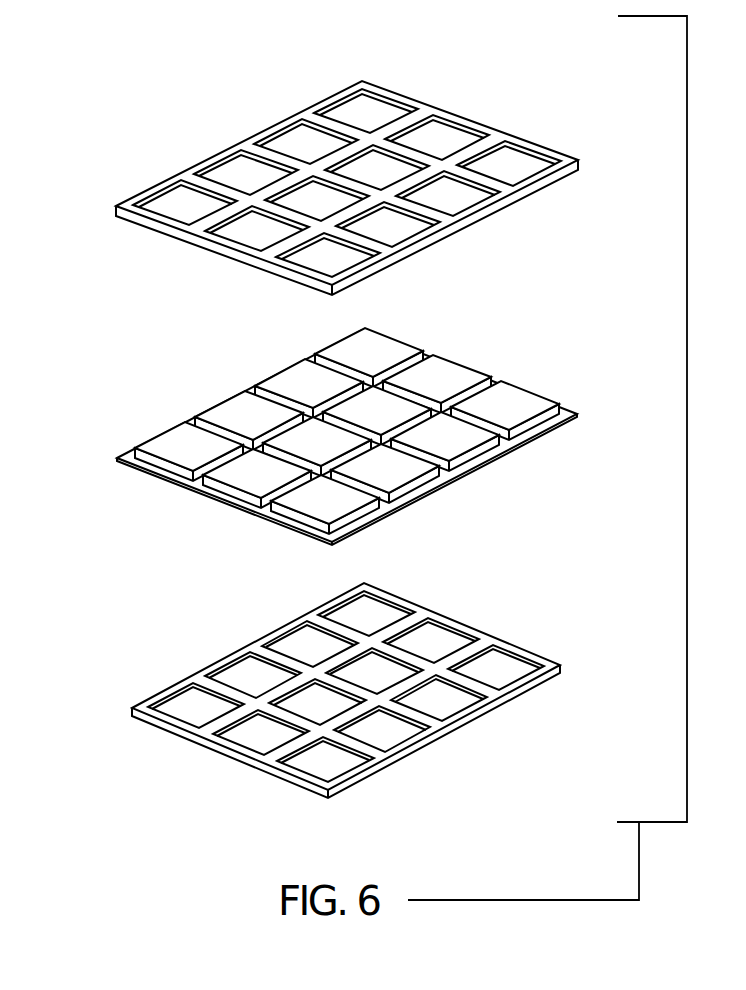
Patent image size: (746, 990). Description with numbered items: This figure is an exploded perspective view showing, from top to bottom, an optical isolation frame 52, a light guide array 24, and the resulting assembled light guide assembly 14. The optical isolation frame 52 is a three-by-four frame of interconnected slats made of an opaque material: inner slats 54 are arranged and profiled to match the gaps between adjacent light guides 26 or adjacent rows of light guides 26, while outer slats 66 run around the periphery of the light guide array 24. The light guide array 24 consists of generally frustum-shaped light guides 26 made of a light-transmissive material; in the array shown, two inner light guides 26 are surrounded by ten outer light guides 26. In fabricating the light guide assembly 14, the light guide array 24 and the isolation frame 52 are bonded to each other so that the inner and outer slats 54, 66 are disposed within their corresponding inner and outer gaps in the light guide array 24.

The optical isolation frame 52 is at (347, 187).
The inner slats 54 is at (420, 158).
The outer slats 66 is at (577, 160).
The light guide array 24 is at (304, 430).
The light guide 26 is at (513, 410).
The light guide assembly 14 is at (125, 604).